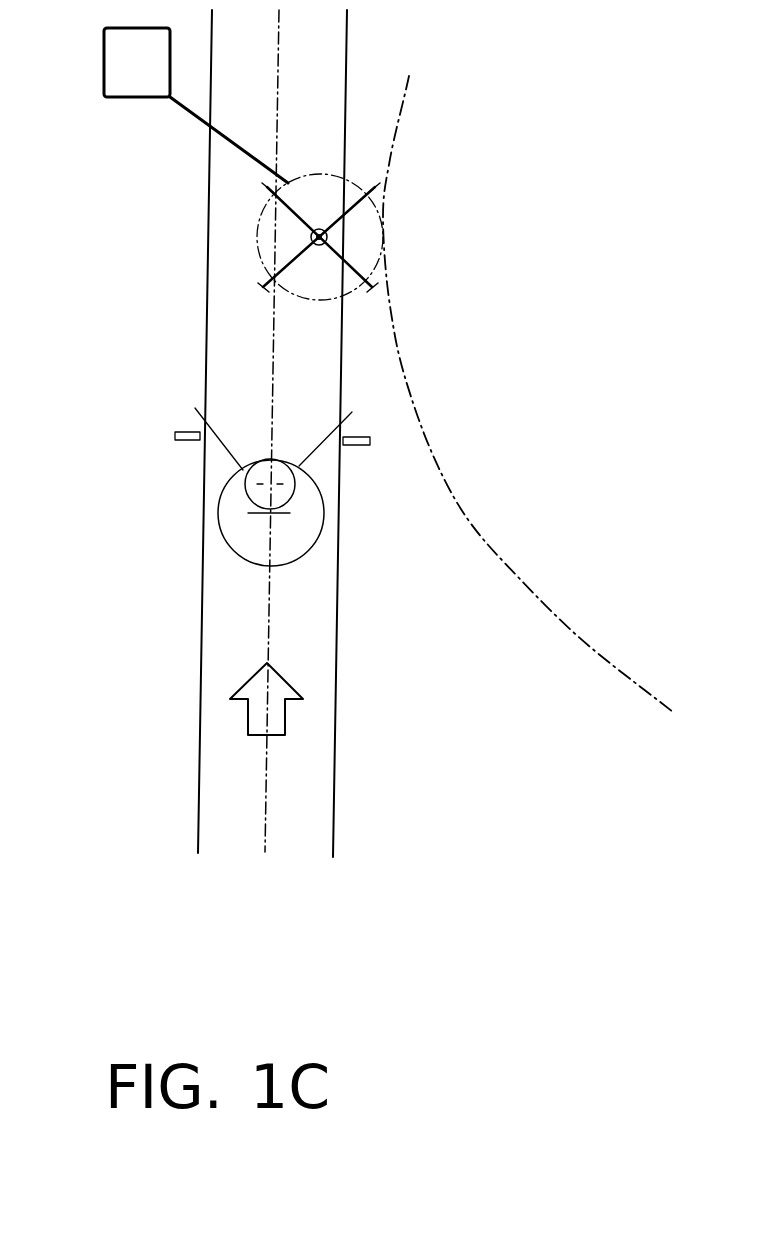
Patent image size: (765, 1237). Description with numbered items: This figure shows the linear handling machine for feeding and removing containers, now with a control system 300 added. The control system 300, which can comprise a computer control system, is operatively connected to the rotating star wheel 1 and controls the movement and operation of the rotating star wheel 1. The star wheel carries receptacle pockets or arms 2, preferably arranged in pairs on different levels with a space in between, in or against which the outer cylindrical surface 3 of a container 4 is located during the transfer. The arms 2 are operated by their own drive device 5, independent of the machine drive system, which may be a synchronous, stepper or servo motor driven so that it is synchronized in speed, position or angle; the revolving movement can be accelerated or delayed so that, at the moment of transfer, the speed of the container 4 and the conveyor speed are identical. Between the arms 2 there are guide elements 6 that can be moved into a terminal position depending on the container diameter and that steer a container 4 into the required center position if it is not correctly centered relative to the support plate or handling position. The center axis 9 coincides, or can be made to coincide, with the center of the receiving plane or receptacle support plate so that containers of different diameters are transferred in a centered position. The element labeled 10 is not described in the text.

The rotating star wheel 1 is at (311, 236).
The arms 2 is at (270, 185).
The outer cylindrical surface 3 is at (244, 483).
The container 4 is at (172, 524).
The drive device 5 is at (173, 265).
The guide elements 6 is at (197, 390).
The center axis 9 is at (160, 719).
The container wall 10 is at (518, 578).
The control system 300 is at (136, 72).